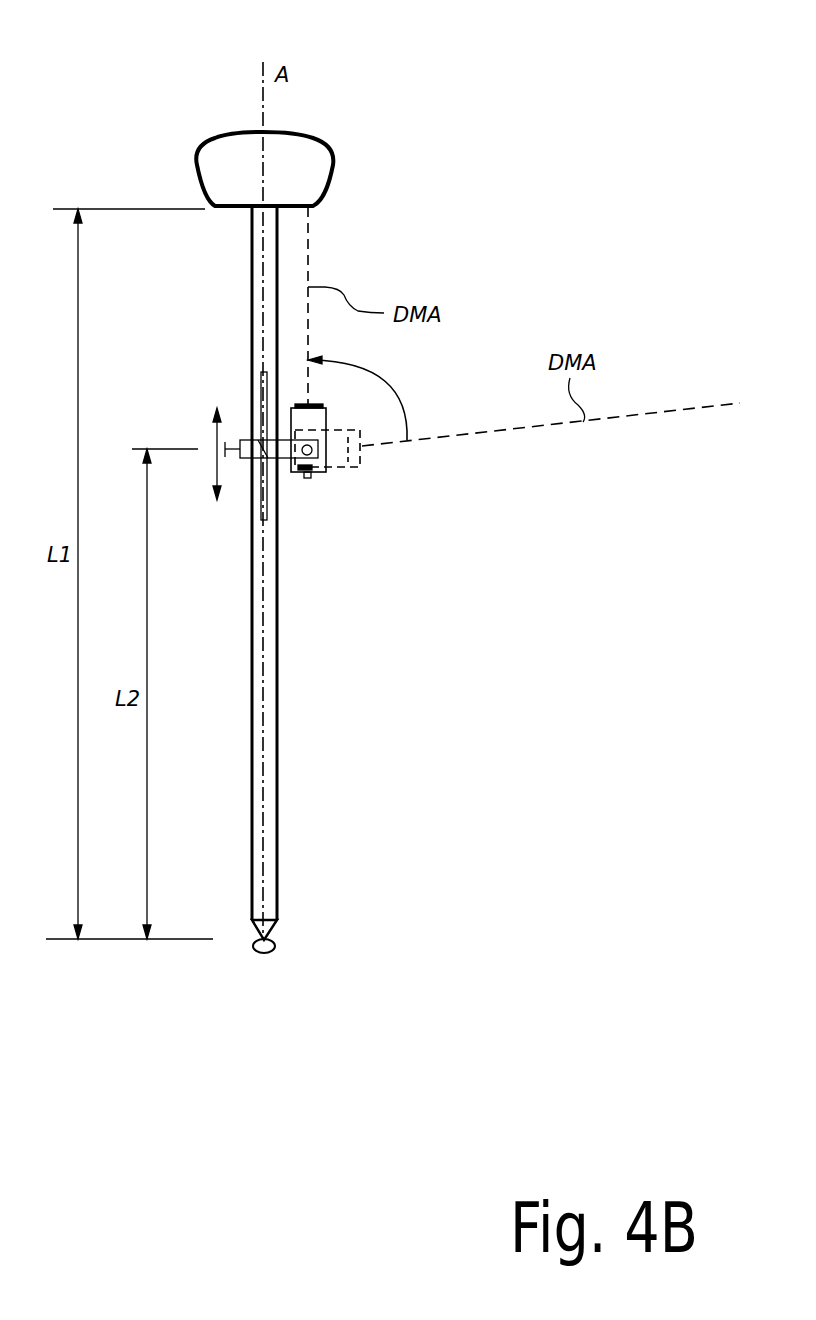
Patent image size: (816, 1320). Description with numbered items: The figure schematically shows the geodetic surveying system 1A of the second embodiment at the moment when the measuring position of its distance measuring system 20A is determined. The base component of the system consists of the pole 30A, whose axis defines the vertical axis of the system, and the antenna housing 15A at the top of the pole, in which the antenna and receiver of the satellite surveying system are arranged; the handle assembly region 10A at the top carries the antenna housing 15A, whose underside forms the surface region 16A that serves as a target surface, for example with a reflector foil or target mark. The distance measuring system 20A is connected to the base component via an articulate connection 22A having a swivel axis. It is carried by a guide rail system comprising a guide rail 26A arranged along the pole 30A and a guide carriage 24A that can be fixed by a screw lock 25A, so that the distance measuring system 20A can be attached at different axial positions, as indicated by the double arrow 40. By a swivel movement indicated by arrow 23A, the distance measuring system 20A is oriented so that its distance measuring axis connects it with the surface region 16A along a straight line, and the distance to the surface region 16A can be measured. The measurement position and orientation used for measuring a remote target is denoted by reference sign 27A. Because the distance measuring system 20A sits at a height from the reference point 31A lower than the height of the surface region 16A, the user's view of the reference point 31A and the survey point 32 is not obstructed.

The geodetic surveying system 1A is at (185, 88).
The handle assembly 10A is at (330, 128).
The antenna housing 15A is at (333, 175).
The surface region 16A is at (310, 208).
The distance measuring system 20A is at (310, 470).
The articulate connection 22A is at (330, 450).
The arrow 23A is at (390, 380).
The guide carriage 24A is at (250, 447).
The screw lock 25A is at (232, 447).
The guide rail 26A is at (267, 475).
The measurement position and orientation 27A is at (362, 445).
The pole 30A is at (272, 580).
The reference point 31A is at (272, 940).
The survey point 32 is at (266, 953).
The double arrow 40 is at (210, 432).